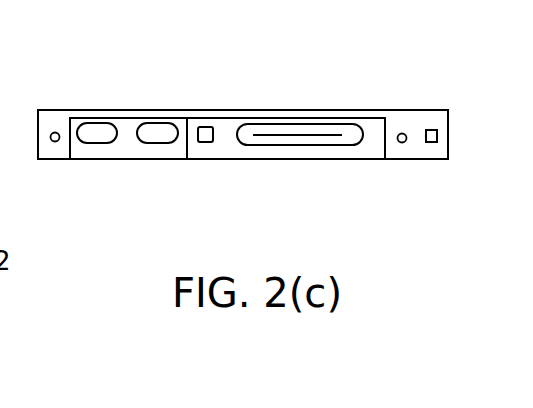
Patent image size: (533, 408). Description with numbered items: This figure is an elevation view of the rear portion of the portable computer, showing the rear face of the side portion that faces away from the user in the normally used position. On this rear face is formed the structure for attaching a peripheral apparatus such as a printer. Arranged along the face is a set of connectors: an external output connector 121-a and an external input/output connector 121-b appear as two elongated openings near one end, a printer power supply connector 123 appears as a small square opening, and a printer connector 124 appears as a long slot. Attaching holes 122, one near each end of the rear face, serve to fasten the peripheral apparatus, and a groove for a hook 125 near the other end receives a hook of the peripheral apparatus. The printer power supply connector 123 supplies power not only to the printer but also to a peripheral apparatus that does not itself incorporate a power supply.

The external output connector 121-a is at (99, 128).
The external input/output connector 121-b is at (158, 138).
The attaching holes 122 is at (51, 136).
The printer power supply connector 123 is at (203, 140).
The printer connector 124 is at (345, 142).
The groove for a hook 125 is at (438, 135).